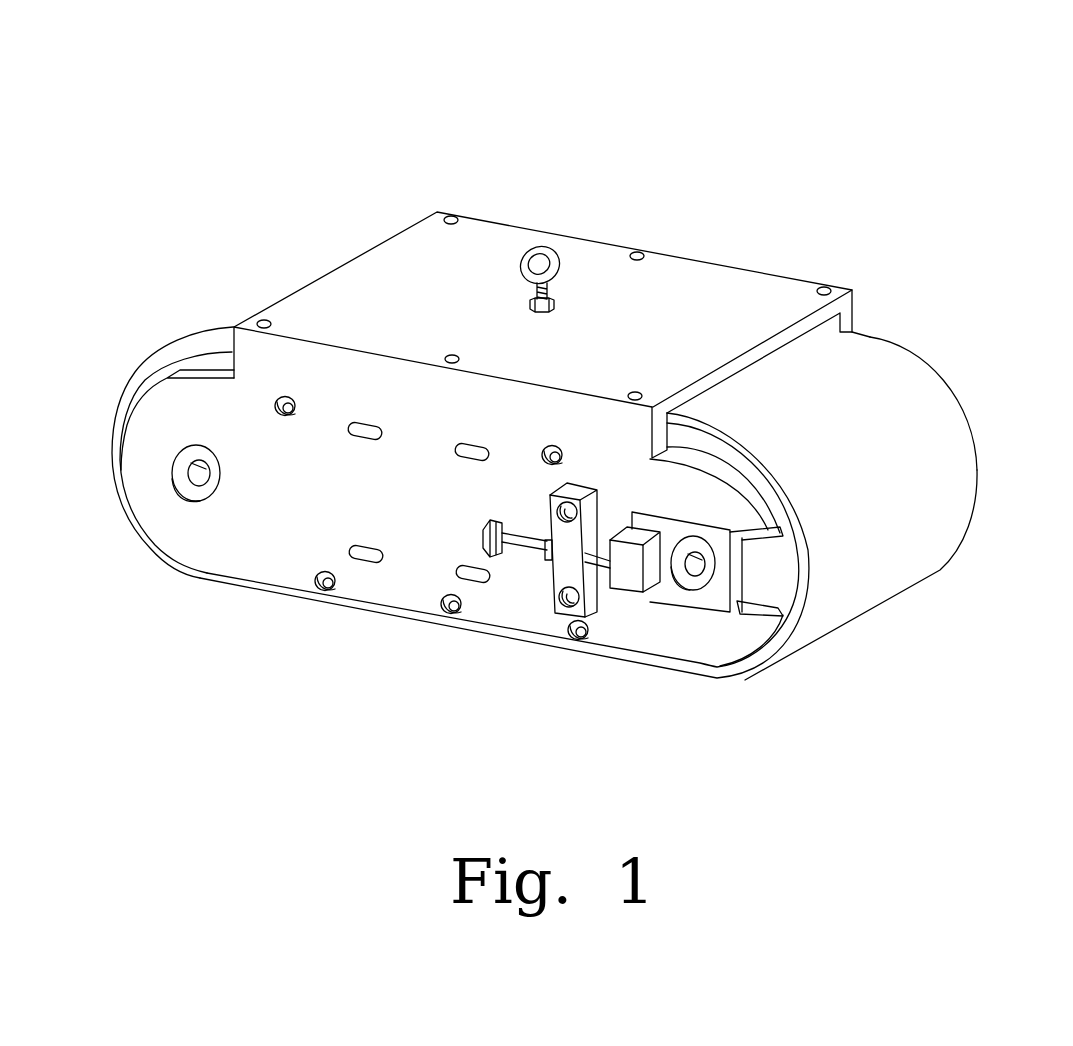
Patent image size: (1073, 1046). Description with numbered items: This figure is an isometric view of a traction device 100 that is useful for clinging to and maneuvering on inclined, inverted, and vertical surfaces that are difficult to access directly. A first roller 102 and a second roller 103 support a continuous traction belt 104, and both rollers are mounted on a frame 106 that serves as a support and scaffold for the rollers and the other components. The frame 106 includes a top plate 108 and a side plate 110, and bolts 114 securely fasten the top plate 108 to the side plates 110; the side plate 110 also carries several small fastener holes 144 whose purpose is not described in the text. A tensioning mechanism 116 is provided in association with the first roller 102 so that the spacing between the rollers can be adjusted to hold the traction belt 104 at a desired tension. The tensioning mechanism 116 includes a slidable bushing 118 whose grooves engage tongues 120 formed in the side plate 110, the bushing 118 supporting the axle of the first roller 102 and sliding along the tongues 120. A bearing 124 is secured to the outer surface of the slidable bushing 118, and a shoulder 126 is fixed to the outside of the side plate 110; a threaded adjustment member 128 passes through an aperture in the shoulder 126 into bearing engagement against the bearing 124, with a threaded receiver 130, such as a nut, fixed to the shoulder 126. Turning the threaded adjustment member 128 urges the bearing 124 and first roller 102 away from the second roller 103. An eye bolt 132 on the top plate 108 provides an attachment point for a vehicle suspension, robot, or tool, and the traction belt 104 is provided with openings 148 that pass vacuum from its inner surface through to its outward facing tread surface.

The traction device 100 is at (844, 134).
The first roller 102 is at (792, 597).
The second roller 103 is at (158, 373).
The traction belt 104 is at (880, 385).
The frame 106 is at (402, 591).
The top plate 108 is at (467, 260).
The side plate 110 is at (270, 522).
The bolts 114 is at (450, 216).
The tensioning mechanism 116 is at (625, 581).
The slidable bushing 118 is at (720, 590).
The tongues 120 is at (772, 550).
The bearing 124 is at (655, 590).
The shoulder 126 is at (547, 577).
The threaded adjustment member 128 is at (540, 557).
The threaded receiver 130 is at (550, 575).
The eye bolt 132 is at (540, 250).
The screw holes 144 is at (321, 592).
The openings 148 is at (984, 447).